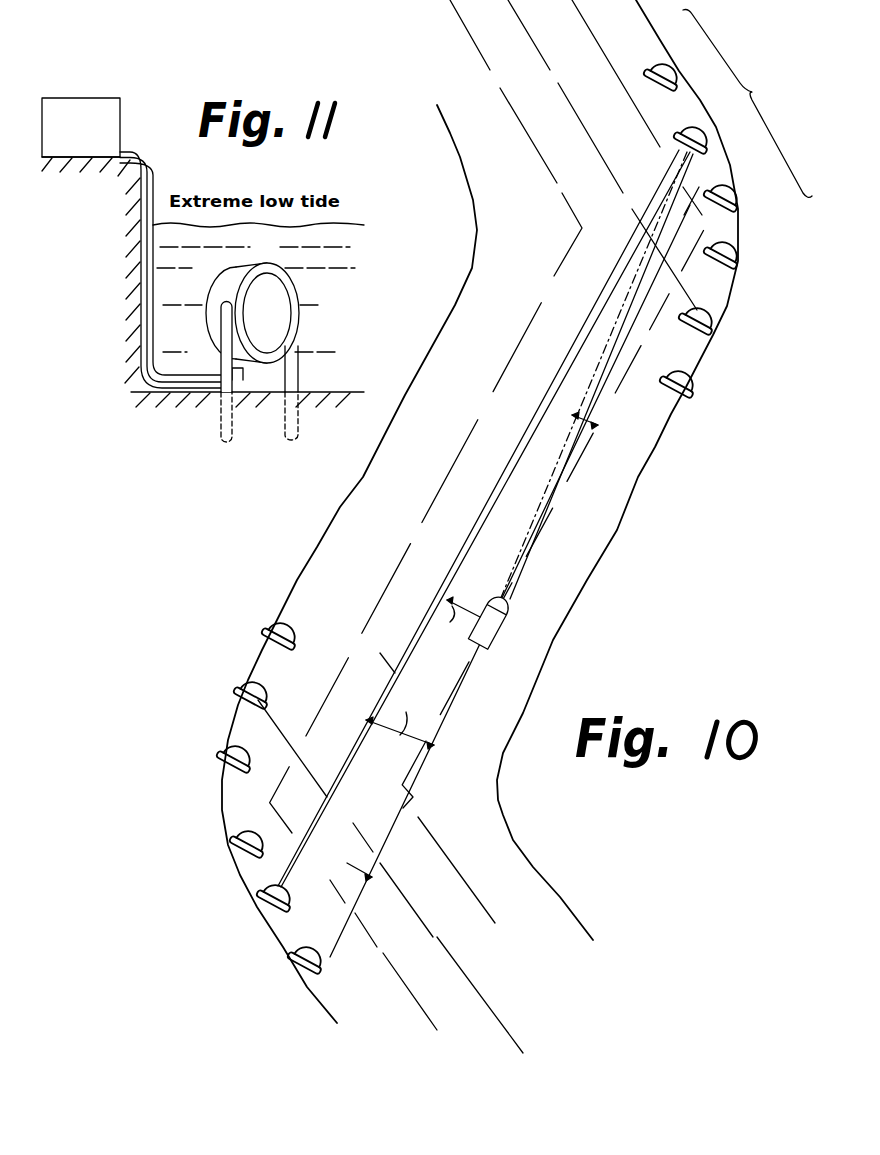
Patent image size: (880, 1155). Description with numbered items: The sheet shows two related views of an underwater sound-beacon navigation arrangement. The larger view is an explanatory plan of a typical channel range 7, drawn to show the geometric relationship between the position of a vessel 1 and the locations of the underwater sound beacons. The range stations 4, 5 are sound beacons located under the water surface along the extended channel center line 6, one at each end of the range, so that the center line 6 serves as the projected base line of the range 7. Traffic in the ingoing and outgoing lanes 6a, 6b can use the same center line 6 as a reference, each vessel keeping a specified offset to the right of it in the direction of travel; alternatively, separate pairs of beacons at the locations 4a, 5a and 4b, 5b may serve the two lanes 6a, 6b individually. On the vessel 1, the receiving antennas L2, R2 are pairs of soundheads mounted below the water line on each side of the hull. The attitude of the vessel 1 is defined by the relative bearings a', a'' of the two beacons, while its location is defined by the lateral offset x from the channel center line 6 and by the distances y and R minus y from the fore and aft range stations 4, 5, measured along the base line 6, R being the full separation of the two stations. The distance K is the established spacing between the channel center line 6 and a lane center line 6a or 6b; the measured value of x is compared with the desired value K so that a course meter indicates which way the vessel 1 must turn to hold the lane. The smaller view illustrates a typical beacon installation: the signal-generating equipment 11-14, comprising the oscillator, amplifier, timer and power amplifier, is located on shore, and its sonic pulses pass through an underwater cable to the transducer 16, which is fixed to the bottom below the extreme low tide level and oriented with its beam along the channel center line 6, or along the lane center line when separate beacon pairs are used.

In FIG. 10, the vessel 1 is at (508, 612).
In FIG. 10, the range station 4 is at (688, 126).
In FIG. 10, the beacon location 4a is at (664, 68).
In FIG. 10, the beacon location 4b is at (733, 193).
In FIG. 10, the range station 5 is at (265, 911).
In FIG. 10, the beacon location 5a is at (233, 848).
In FIG. 10, the beacon location 5b is at (292, 971).
In FIG. 10, the channel center line 6 is at (574, 349).
In FIG. 10, the ingoing lane 6a is at (530, 322).
In FIG. 10, the outgoing lane 6b is at (618, 385).
In FIG. 10, the channel range 7 is at (747, 104).
In FIG. 10, the range length R is at (380, 659).
In FIG. 10, the receiving antenna R2 is at (506, 630).
In FIG. 10, the receiving antenna L2 is at (480, 616).
In FIG. 10, the lane offset distance K is at (400, 722).
In FIG. 10, the lateral offset x is at (459, 615).
In FIG. 10, the distance from fore range station y is at (596, 376).
In FIG. 10, the relative bearing a' is at (604, 434).
In FIG. 10, the relative bearing a'' is at (351, 866).
In FIG. 11, the beacon signal equipment 11-14 is at (88, 98).
In FIG. 11, the transducer 16 is at (299, 295).